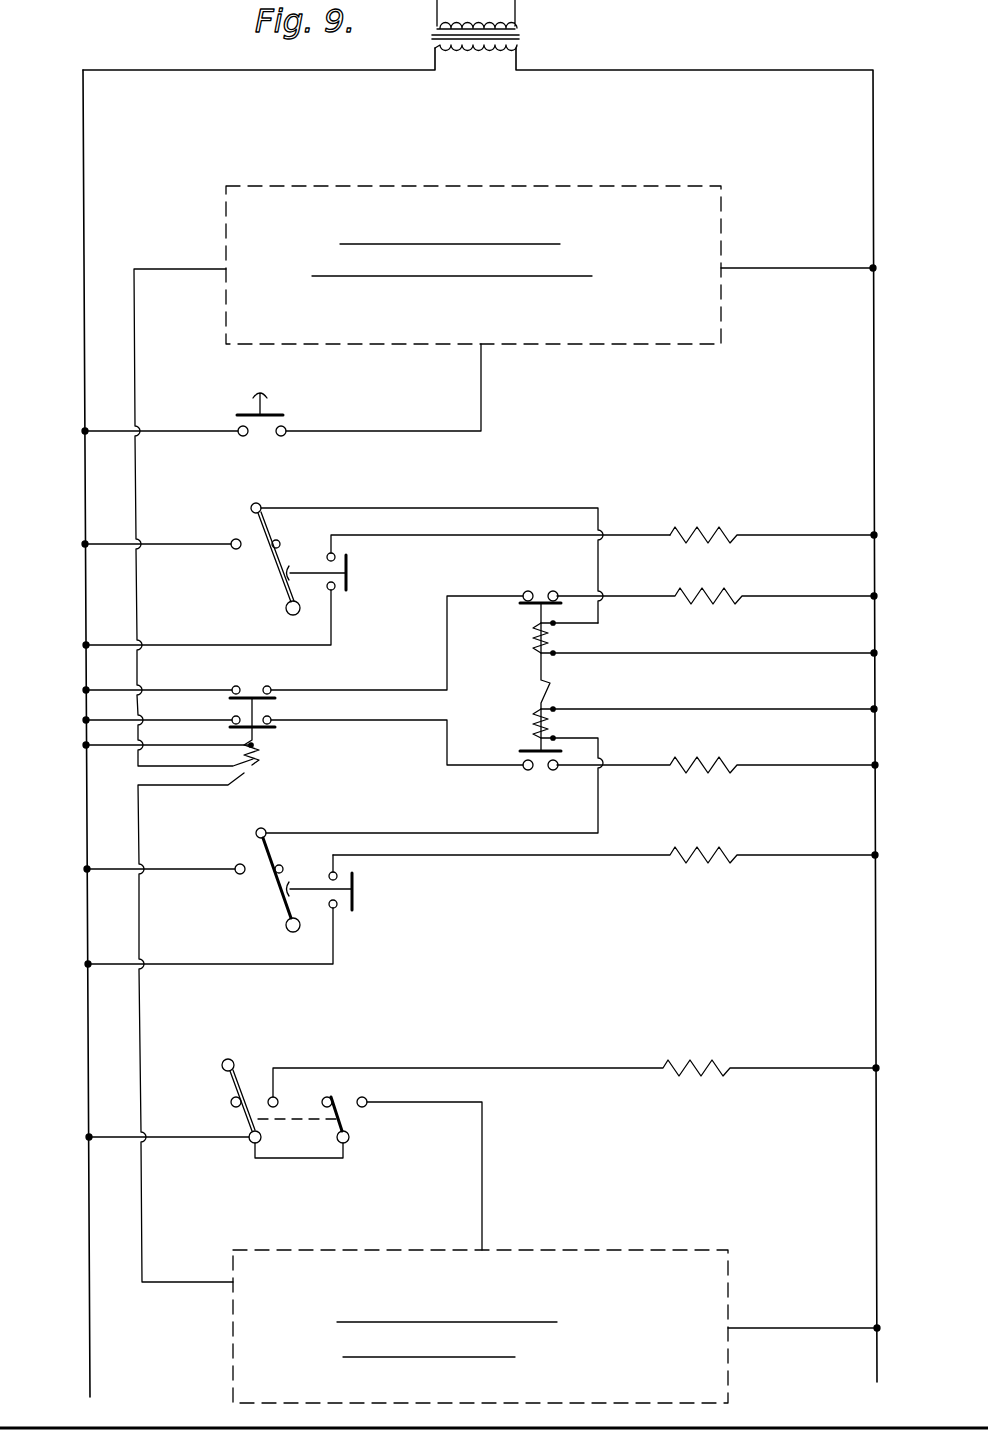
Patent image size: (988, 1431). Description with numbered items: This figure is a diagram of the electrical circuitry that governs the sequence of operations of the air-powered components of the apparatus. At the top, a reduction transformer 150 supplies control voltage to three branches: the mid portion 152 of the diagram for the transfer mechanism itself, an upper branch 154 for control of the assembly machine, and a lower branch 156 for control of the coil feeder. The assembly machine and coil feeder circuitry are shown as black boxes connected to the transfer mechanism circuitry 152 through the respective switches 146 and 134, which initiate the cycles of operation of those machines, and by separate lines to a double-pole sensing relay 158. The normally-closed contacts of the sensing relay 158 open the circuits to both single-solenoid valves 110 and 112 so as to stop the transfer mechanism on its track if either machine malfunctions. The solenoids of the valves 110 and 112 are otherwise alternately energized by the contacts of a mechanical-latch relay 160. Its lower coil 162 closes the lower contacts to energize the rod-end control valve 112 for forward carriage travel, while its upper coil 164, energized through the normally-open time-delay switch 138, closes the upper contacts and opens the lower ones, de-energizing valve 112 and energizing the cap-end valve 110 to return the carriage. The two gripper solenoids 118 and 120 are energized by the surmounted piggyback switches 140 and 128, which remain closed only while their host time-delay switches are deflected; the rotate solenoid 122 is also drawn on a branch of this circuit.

The single-solenoid valve 110 is at (718, 598).
The single-solenoid valve 112 is at (723, 770).
The solenoid 118 is at (730, 540).
The solenoid 120 is at (722, 860).
The rotate solenoid 122 is at (703, 1076).
The piggyback switch 128 is at (356, 897).
The switch 134 is at (338, 1160).
The time delay switch 138 is at (249, 535).
The piggyback switch 140 is at (350, 569).
The switch 146 is at (284, 421).
The reduction transformer 150 is at (481, 60).
The mid portion 152 is at (70, 225).
The upper branch 154 is at (688, 344).
The lower branch 156 is at (645, 1250).
The double-pole sensing relay 158 is at (262, 757).
The mechanical-latch relay 160 is at (571, 712).
The lower coil 162 is at (556, 722).
The upper coil 164 is at (556, 638).